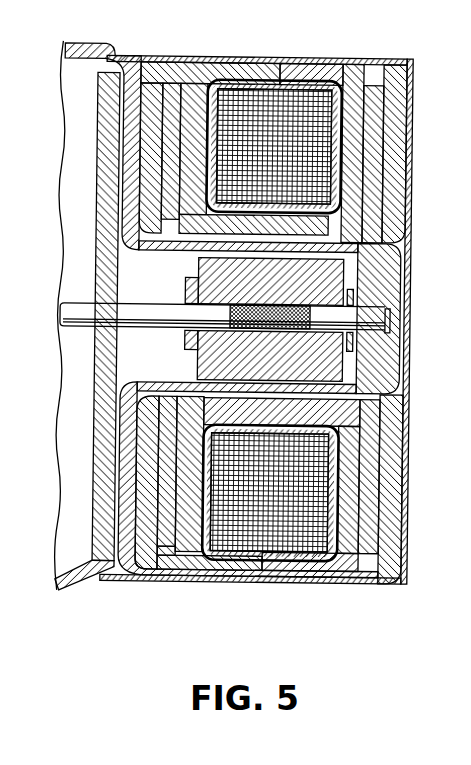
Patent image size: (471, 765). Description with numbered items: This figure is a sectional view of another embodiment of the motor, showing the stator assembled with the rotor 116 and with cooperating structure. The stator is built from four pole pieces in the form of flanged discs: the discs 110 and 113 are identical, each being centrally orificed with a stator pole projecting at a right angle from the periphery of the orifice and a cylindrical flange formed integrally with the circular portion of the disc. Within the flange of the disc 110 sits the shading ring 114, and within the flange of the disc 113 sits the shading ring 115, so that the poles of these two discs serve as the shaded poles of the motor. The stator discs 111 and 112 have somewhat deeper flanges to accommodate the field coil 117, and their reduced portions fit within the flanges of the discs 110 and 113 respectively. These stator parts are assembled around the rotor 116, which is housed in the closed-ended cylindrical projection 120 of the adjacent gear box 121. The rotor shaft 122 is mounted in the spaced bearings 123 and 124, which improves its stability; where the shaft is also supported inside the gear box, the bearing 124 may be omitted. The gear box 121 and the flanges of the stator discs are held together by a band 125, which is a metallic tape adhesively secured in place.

The stator pole piece 110 is at (155, 571).
The stator pole piece 111 is at (215, 572).
The stator pole piece 112 is at (356, 432).
The stator pole piece 113 is at (406, 535).
The shading ring 114 is at (168, 548).
The shading ring 115 is at (375, 471).
The rotor 116 is at (340, 276).
The field coil 117 is at (310, 549).
The cylindrical projection 120 is at (407, 348).
The gear box 121 is at (76, 589).
The rotor shaft 122 is at (90, 330).
The bearing 123 is at (118, 306).
The bearing 124 is at (353, 298).
The band 125 is at (247, 57).